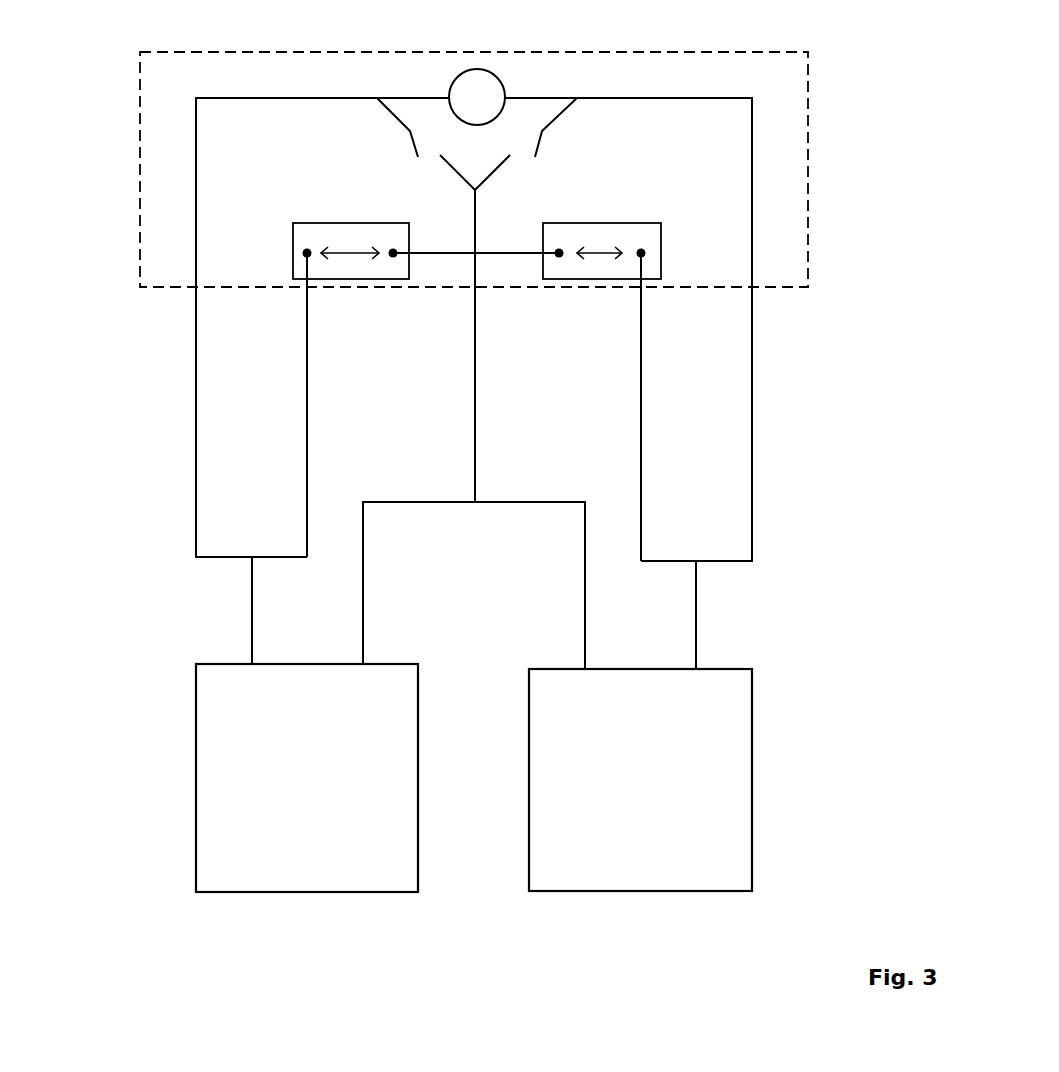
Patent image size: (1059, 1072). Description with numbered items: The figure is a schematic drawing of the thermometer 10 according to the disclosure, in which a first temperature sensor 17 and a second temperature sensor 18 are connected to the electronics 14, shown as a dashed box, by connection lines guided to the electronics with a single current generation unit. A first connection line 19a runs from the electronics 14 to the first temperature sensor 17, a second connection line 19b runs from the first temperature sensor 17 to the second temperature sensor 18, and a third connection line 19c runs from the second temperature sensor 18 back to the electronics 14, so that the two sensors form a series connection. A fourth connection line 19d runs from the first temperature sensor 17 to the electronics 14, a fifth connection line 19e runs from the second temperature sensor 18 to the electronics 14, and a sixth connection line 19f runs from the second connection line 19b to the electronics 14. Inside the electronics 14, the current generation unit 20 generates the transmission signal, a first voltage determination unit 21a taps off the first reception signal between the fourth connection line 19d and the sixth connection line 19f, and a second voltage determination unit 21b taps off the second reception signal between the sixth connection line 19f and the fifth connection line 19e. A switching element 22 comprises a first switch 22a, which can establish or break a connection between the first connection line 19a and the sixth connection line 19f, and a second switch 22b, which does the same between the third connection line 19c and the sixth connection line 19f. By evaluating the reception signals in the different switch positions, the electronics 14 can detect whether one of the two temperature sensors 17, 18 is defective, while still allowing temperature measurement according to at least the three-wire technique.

The measuring system 10 is at (0, 3).
The electronics 14 is at (138, 200).
The first temperature sensor 17 is at (307, 778).
The second temperature sensor 18 is at (640, 780).
The first connection line 19a is at (298, 327).
The second connection line 19b is at (474, 585).
The third connection line 19c is at (655, 329).
The fourth connection line 19d is at (279, 458).
The fifth connection line 19e is at (668, 461).
The sixth connection line 19f is at (499, 346).
The current generation unit 20 is at (474, 78).
The first voltage determination unit 21a is at (290, 251).
The second voltage determination unit 21b is at (540, 237).
The switching element 22 is at (431, 144).
The first switch 22a is at (426, 144).
The second switch 22b is at (528, 144).